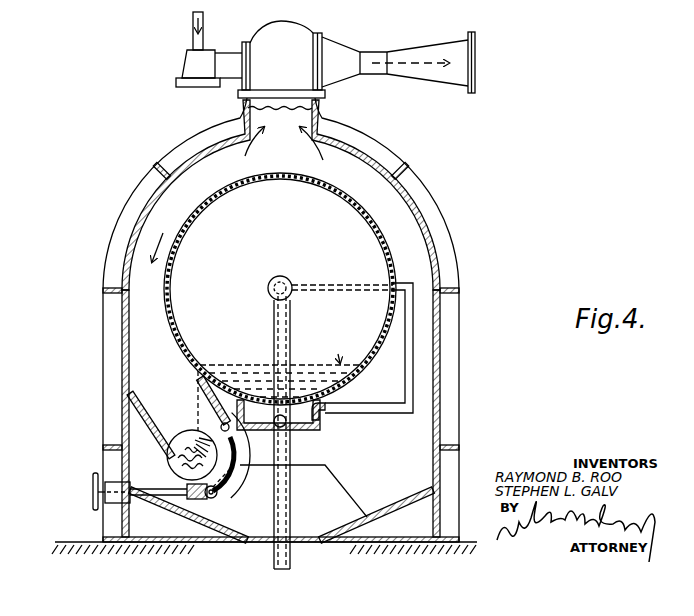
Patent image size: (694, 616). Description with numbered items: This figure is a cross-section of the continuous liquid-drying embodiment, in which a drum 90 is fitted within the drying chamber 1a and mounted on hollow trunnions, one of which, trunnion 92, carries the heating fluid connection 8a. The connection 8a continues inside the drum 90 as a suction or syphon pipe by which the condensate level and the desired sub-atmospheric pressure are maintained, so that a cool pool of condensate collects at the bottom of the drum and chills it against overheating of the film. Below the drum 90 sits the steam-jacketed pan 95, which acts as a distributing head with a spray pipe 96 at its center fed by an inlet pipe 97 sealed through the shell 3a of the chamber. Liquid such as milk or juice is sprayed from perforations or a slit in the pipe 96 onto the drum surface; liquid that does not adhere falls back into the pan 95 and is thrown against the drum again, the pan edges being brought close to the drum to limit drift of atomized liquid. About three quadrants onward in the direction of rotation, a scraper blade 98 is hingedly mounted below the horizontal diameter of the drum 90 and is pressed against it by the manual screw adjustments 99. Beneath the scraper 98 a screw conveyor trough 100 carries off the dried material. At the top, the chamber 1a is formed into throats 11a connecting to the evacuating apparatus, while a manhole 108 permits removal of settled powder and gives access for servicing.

The drying chamber 1a is at (417, 208).
The throats 11a is at (325, 118).
The drum 90 is at (343, 193).
The trunnion 92 is at (272, 276).
The heating fluid connection 8a is at (291, 320).
The pan 95 is at (324, 423).
The inlet pipe 97 is at (296, 455).
The spray pipe 96 is at (279, 428).
The manhole 108 is at (348, 487).
The shell 3a is at (200, 543).
The scraper blade 98 is at (200, 386).
The screw conveyor trough 100 is at (172, 459).
The manual screw adjustments 99 is at (93, 492).